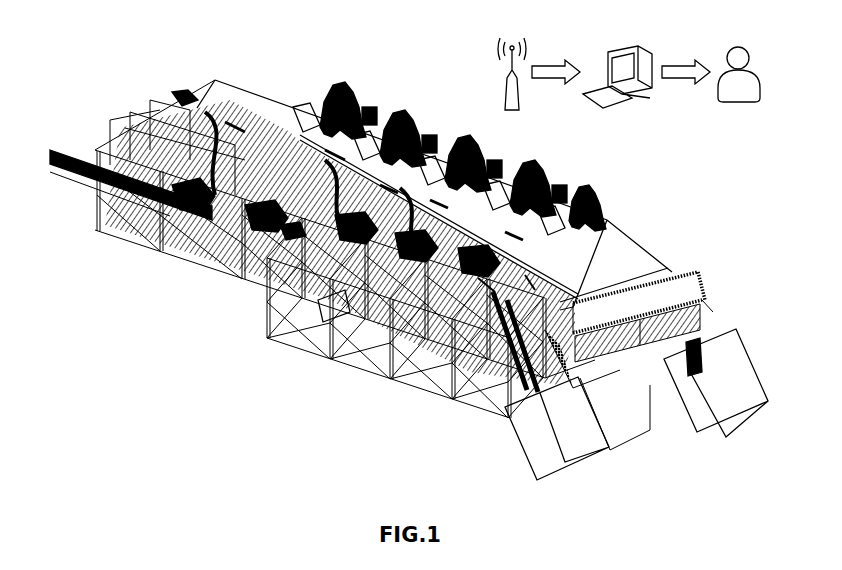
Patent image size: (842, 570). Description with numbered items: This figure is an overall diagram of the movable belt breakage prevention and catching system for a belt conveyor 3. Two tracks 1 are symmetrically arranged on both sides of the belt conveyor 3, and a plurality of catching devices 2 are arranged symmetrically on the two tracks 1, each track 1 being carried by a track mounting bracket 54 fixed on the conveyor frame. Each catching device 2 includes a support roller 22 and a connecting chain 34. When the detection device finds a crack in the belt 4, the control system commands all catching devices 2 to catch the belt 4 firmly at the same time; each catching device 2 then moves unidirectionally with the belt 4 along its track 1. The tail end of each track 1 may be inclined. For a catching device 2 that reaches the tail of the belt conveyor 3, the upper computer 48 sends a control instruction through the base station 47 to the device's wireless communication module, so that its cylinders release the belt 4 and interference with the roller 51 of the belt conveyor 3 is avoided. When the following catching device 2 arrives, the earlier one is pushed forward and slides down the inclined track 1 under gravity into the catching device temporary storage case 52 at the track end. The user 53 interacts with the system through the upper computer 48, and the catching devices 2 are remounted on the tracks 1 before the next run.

The track 1 is at (62, 157).
The catching device 2 is at (182, 190).
The belt conveyor 3 is at (714, 312).
The belt 4 is at (530, 212).
The support roller 22 is at (472, 253).
The connecting chain 34 is at (290, 231).
The base station 47 is at (517, 98).
The upper computer 48 is at (645, 93).
The roller of the belt conveyor 51 is at (577, 317).
The catching device temporary storage case 52 is at (560, 419).
The user 53 is at (736, 93).
The track mounting bracket 54 is at (330, 305).